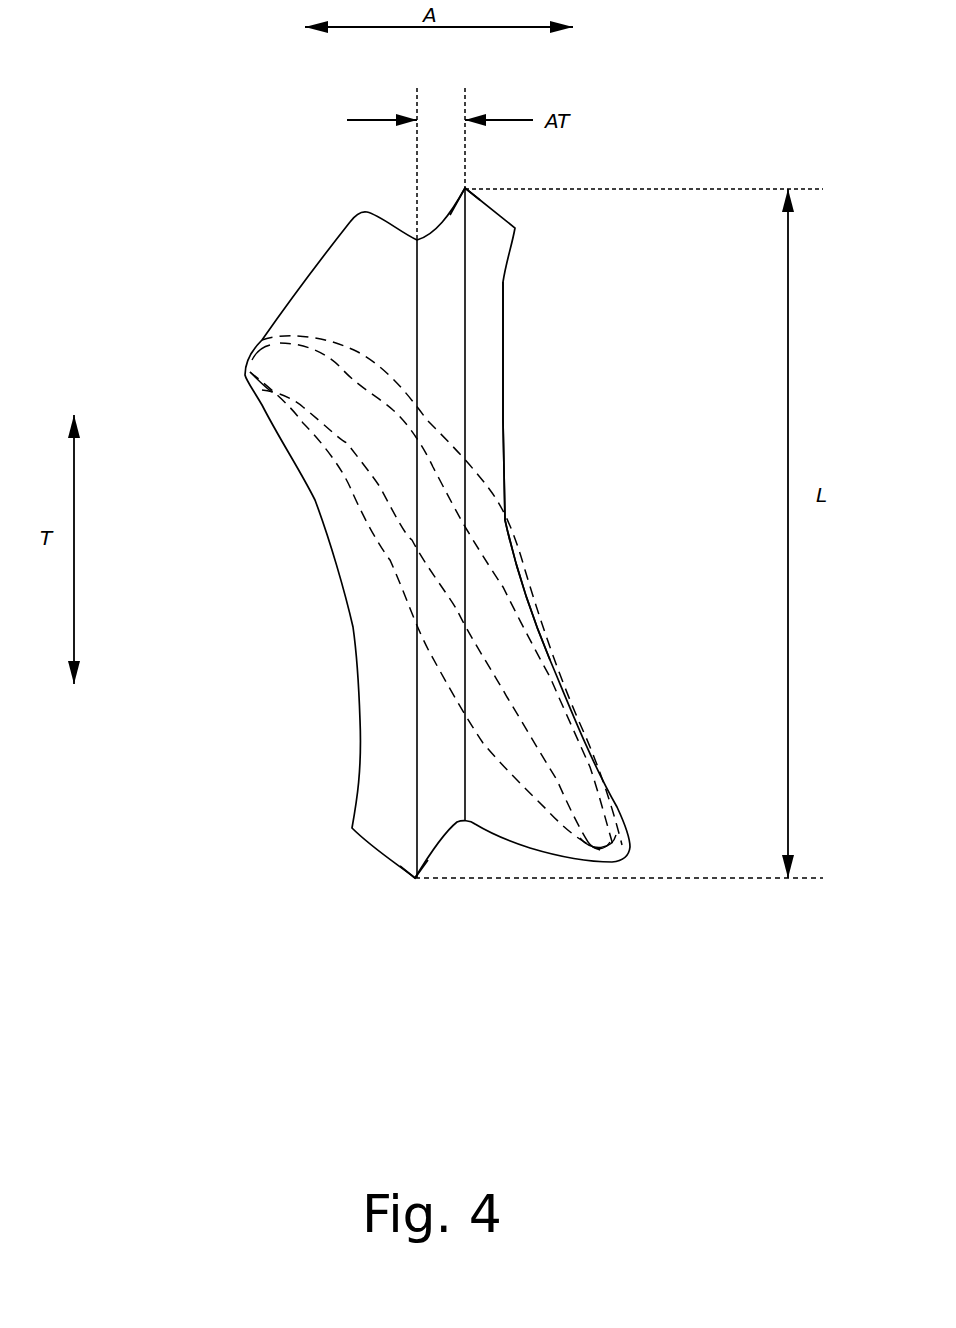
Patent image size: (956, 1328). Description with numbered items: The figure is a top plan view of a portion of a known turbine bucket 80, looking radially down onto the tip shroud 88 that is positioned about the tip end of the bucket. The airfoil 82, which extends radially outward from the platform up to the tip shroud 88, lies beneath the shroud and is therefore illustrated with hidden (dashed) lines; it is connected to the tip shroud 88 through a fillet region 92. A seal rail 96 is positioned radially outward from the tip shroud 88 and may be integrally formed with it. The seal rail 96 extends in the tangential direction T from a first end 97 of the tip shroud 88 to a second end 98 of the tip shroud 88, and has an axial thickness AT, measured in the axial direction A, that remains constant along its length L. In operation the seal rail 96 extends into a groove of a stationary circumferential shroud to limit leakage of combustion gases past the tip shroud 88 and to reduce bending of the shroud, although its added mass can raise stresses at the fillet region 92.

The turbine bucket 80 is at (188, 170).
The airfoil 82 is at (353, 432).
The tip shroud 88 is at (482, 410).
The fillet region 92 is at (378, 502).
The seal rail 96 is at (448, 367).
The first end 97 is at (480, 174).
The second end 98 is at (432, 893).